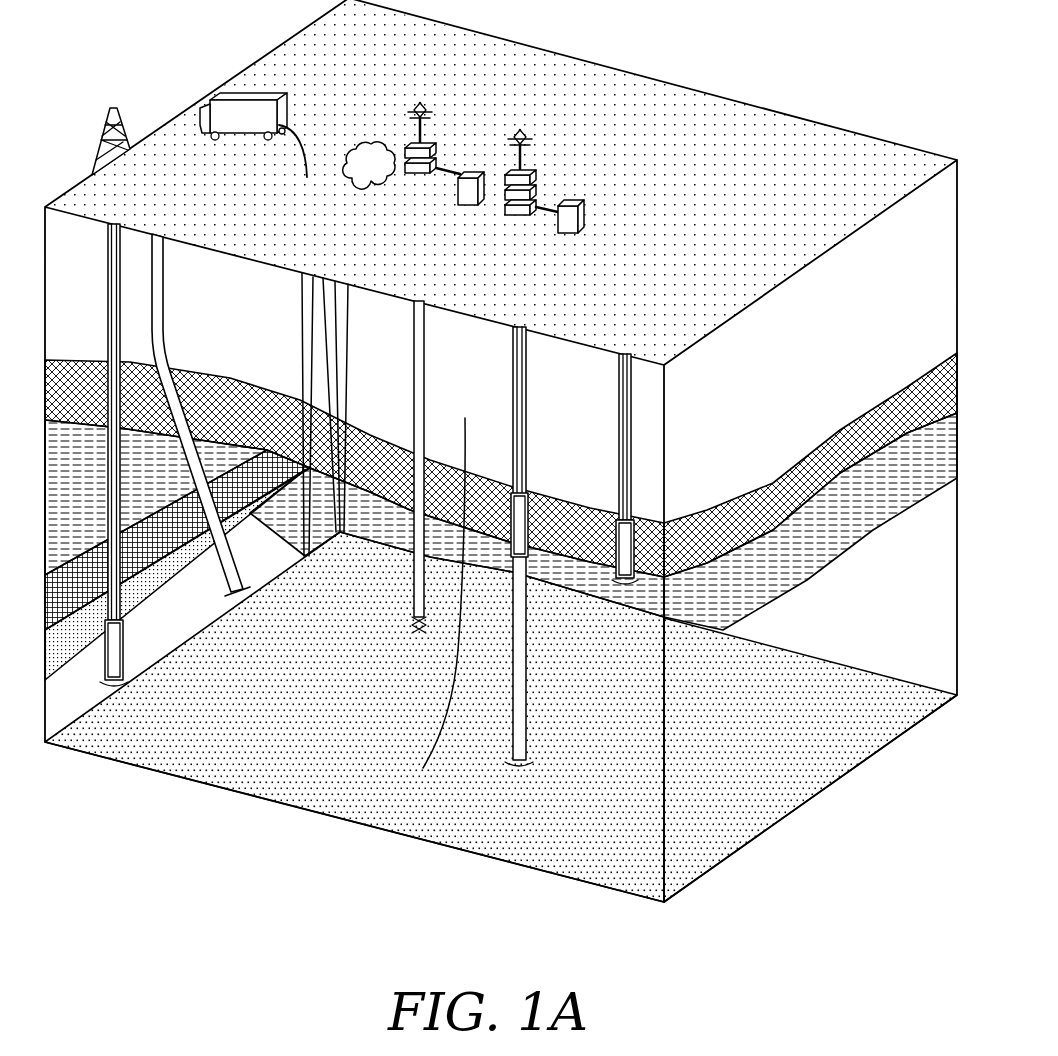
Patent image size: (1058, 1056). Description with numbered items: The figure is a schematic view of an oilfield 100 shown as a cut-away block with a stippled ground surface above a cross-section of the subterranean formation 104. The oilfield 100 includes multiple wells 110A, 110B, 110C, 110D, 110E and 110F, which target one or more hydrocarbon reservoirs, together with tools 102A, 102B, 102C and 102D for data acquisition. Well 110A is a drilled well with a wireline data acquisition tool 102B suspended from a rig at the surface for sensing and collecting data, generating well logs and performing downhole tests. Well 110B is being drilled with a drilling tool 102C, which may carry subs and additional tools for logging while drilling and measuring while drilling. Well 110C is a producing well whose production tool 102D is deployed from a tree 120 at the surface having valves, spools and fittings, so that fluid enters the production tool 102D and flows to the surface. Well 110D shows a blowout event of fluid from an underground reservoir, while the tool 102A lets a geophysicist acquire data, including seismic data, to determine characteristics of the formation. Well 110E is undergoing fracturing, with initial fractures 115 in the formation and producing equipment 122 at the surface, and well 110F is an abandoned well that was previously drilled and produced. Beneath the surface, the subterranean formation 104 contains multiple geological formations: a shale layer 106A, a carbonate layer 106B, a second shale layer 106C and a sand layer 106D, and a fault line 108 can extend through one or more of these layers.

The oilfield 100 is at (638, 75).
The tool 102A is at (124, 652).
The wireline data acquisition tool 102B is at (643, 552).
The drilling tool 102C is at (530, 532).
The production tool 102D is at (231, 80).
The subterranean formation 104 is at (304, 671).
The shale layer 106A is at (782, 500).
The carbonate layer 106B is at (152, 440).
The shale layer 106C is at (138, 610).
The sand layer 106D is at (152, 585).
The fault line 108 is at (464, 430).
The well 110A is at (113, 106).
The well 110B is at (501, 182).
The well 110C is at (555, 171).
The well 110D is at (361, 132).
The well 110E is at (447, 144).
The well 110F is at (172, 168).
The initial fractures 115 is at (406, 627).
The tree 120 is at (533, 66).
The producing equipment 122 is at (390, 53).